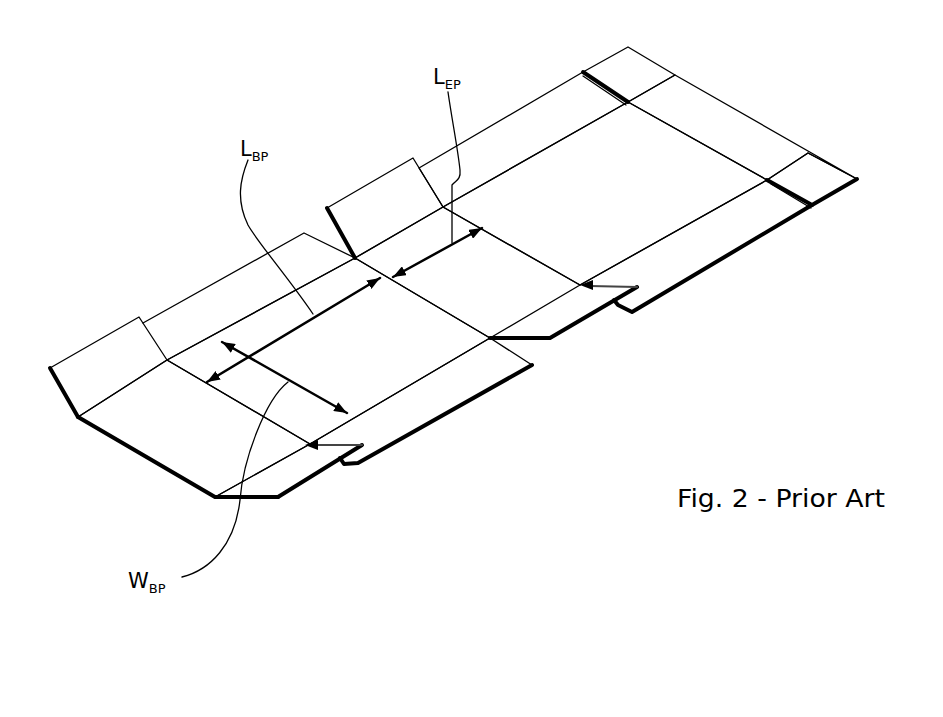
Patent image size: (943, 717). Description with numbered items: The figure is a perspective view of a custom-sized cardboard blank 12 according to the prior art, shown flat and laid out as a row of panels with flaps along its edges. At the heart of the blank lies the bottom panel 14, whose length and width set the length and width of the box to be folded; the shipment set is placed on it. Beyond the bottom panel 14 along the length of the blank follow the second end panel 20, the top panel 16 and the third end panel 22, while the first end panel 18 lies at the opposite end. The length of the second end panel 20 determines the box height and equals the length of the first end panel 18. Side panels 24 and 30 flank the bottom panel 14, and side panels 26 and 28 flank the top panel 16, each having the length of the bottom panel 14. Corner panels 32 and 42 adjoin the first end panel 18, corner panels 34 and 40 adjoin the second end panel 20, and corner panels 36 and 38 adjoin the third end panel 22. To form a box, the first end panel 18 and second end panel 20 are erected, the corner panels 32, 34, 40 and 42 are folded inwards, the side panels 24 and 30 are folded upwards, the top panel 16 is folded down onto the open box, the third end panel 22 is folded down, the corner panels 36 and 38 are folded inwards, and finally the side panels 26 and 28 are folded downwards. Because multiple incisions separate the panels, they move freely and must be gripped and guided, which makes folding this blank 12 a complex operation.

The custom-sized cardboard blank 12 is at (129, 121).
The bottom panel 14 is at (304, 364).
The top panel 16 is at (587, 198).
The first end panel 18 is at (183, 448).
The second end panel 20 is at (468, 290).
The third end panel 22 is at (696, 133).
The side panel 24 is at (394, 422).
The side panel 26 is at (696, 252).
The side panel 28 is at (506, 149).
The side panel 30 is at (229, 312).
The corner panel 32 is at (285, 472).
The corner panel 34 is at (558, 317).
The corner panel 36 is at (800, 191).
The corner panel 38 is at (616, 82).
The corner panel 40 is at (369, 224).
The corner panel 42 is at (93, 378).